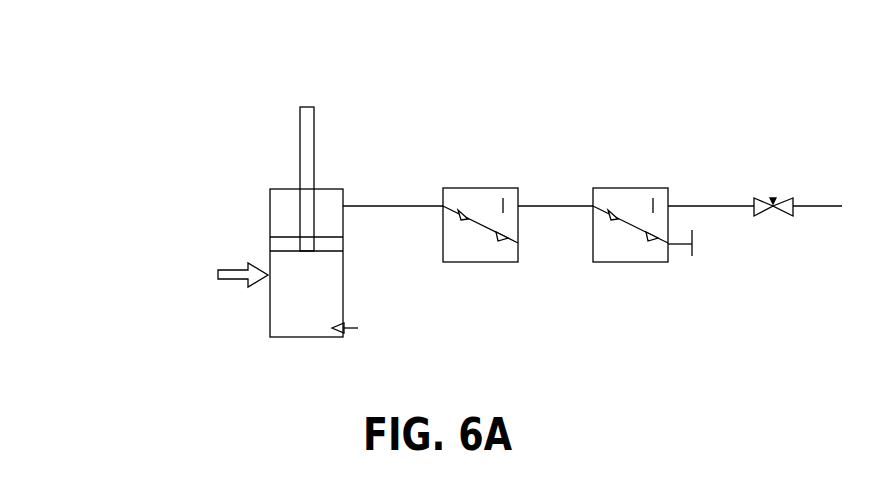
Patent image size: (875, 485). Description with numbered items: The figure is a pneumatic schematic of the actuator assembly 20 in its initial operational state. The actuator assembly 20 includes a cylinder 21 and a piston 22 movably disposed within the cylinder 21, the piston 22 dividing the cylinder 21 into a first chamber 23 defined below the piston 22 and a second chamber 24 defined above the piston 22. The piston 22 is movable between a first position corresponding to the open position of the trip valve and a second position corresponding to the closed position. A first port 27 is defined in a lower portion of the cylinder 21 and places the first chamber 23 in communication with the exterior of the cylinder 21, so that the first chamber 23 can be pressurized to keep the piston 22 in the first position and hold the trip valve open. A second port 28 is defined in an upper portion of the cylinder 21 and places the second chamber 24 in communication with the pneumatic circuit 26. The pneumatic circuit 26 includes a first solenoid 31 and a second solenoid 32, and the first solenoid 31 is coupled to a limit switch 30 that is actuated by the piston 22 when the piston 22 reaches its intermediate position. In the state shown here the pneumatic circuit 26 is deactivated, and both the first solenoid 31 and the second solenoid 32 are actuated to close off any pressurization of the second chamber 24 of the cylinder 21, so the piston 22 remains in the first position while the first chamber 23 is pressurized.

The actuator assembly 20 is at (258, 55).
The cylinder 21 is at (273, 220).
The piston 22 is at (323, 240).
The first chamber 23 is at (282, 309).
The second chamber 24 is at (284, 190).
The pneumatic circuit 26 is at (565, 206).
The first port 27 is at (345, 325).
The second port 28 is at (345, 205).
The limit switch 30 is at (227, 275).
The first solenoid 31 is at (628, 188).
The second solenoid 32 is at (475, 188).